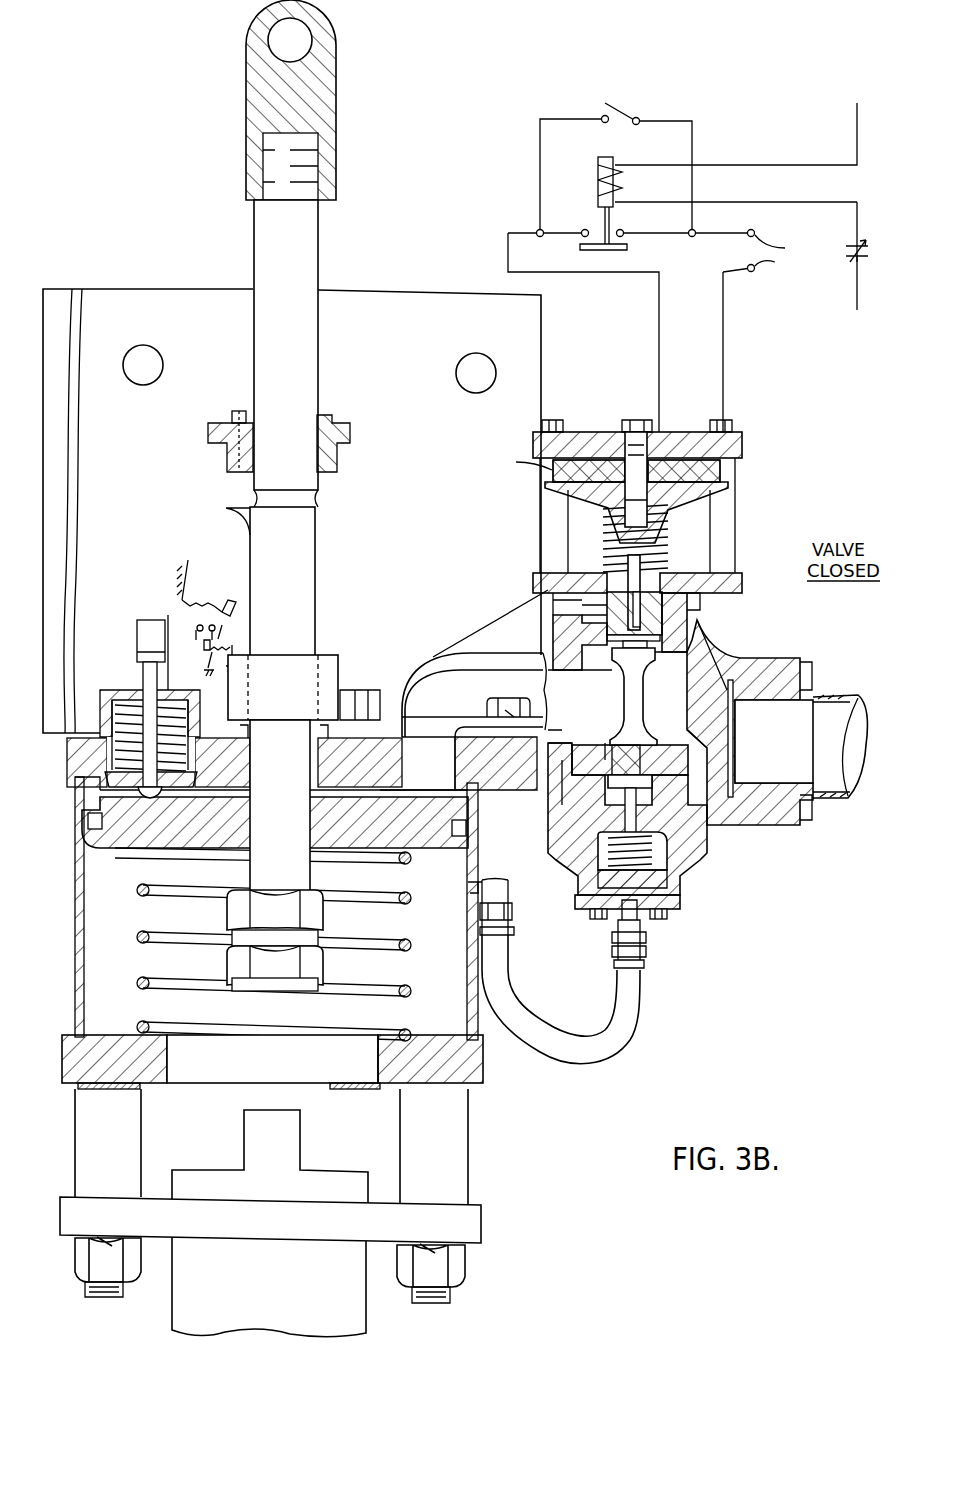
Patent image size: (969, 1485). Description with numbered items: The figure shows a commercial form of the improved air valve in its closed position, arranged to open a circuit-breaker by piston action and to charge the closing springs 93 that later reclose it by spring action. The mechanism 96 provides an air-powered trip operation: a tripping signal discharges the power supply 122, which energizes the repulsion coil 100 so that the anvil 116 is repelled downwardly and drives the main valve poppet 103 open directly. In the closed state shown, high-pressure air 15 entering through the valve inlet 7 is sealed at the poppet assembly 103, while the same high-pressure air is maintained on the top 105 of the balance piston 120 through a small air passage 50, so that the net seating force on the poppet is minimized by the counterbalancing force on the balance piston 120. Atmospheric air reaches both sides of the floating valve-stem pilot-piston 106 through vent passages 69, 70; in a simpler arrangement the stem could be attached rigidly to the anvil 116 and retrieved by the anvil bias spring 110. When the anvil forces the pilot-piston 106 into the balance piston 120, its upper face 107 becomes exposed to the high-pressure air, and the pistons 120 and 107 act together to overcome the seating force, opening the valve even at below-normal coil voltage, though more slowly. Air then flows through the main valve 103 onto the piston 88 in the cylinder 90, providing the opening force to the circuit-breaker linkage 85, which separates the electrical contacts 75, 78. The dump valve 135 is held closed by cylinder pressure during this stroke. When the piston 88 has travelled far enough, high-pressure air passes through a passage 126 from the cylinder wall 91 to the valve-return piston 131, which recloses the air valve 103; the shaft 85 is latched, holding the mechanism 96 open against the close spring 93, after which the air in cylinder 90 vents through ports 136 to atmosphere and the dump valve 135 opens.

The valve inlet 7 is at (834, 724).
The high-pressure air 15 is at (785, 749).
The small air passage 50 is at (714, 648).
The vent passage 69 is at (626, 586).
The vent passage 70 is at (662, 596).
The electrical contact 75 is at (864, 246).
The circuit-breaker movable contact 78 is at (868, 262).
The circuit-breaker linkage 85 is at (255, 243).
The piston 88 is at (115, 822).
The cylinder 90 is at (481, 1012).
The cylinder wall 91 is at (470, 875).
The closing spring 93 is at (138, 940).
The mechanism 96 is at (524, 824).
The repulsion coil 100 is at (790, 489).
The valve poppet 103 is at (680, 768).
The top of balance piston 105 is at (690, 612).
The valve-stem pilot-piston 106 is at (600, 610).
The upper face of valve-stem pilot-piston 107 is at (657, 590).
The anvil bias spring 110 is at (603, 523).
The anvil 116 is at (603, 470).
The balance piston 120 is at (586, 637).
The power supply 122 is at (732, 262).
The passage 126 is at (583, 1066).
The valve-return piston 131 is at (645, 912).
The dump valve 135 is at (96, 805).
The ports 136 is at (76, 912).